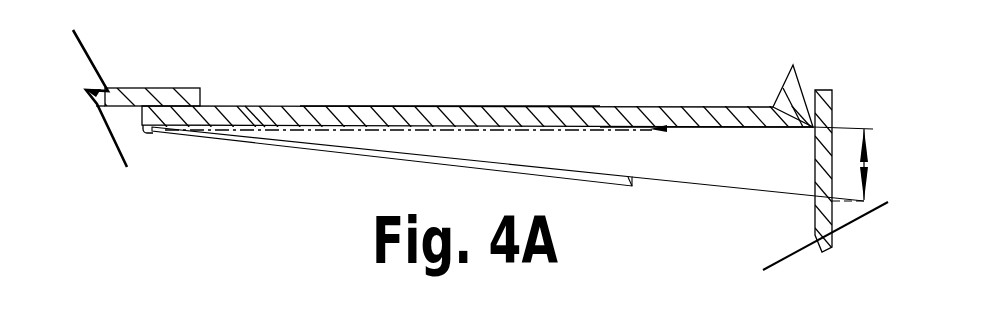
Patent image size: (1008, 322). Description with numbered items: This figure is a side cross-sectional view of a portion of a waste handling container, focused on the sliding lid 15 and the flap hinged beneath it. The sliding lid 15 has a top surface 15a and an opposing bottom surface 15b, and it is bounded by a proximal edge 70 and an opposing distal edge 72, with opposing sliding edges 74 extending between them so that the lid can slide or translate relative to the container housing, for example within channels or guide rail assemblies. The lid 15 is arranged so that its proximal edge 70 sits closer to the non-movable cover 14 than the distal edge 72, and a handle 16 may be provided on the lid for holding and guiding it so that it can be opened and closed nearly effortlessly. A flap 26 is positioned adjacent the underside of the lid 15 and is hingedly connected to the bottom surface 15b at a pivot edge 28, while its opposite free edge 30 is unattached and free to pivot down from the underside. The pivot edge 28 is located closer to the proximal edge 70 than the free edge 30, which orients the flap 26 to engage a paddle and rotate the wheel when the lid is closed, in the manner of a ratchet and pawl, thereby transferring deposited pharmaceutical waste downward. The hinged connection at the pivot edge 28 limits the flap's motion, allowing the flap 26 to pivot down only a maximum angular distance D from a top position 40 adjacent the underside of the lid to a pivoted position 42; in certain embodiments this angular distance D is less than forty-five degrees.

The non-movable cover 14 is at (157, 87).
The sliding lid 15 is at (408, 105).
The top surface 15a is at (583, 106).
The bottom surface 15b is at (725, 129).
The handle 16 is at (788, 77).
The flap 26 is at (393, 156).
The pivot edge 28 is at (148, 133).
The free edge 30 is at (637, 183).
The top position 40 is at (685, 107).
The pivoted position 42 is at (672, 188).
The proximal edge 70 is at (132, 117).
The distal edge 72 is at (832, 110).
The sliding edges 74 is at (252, 118).
The angular distance D is at (866, 163).